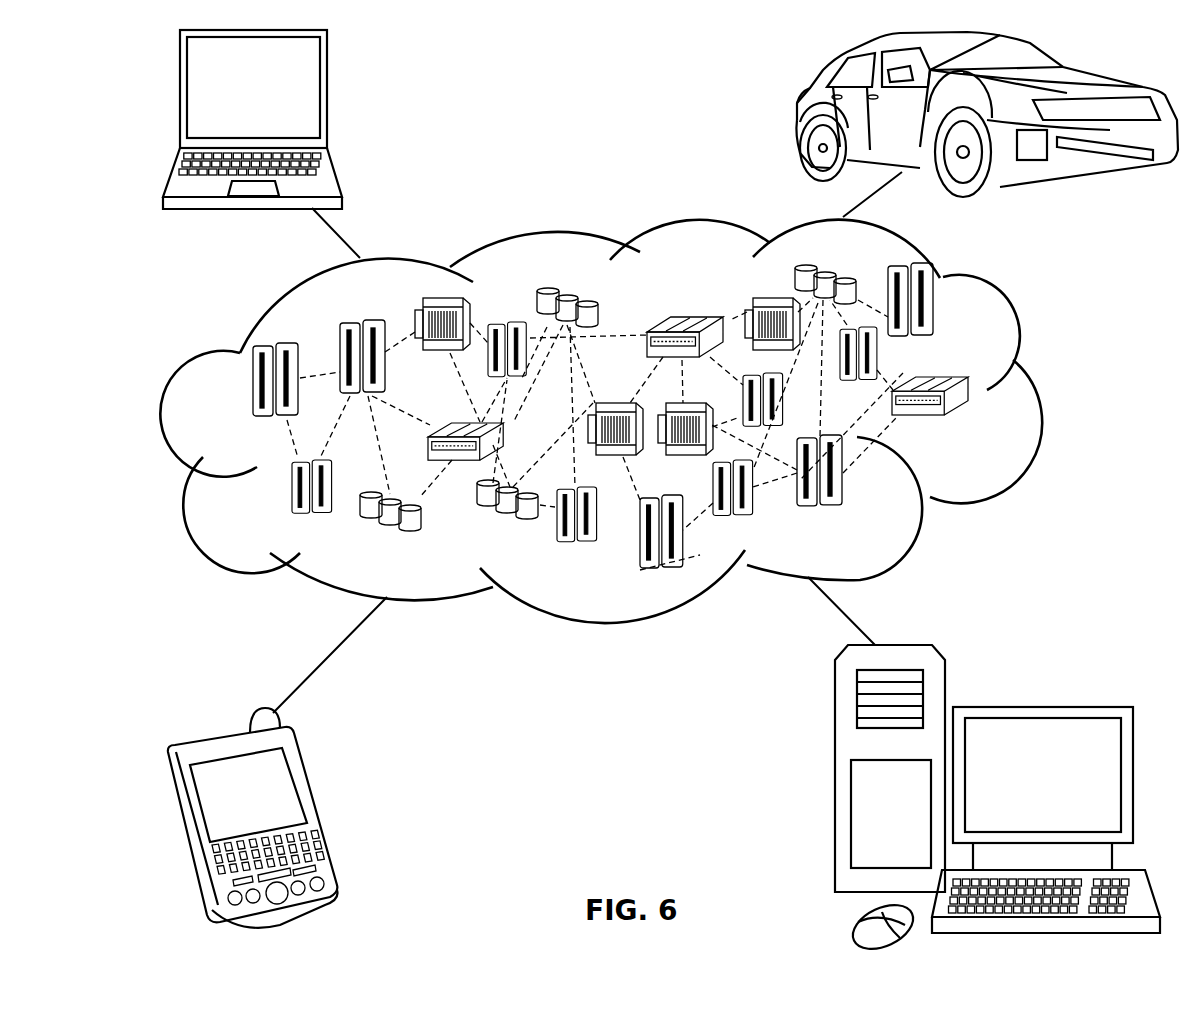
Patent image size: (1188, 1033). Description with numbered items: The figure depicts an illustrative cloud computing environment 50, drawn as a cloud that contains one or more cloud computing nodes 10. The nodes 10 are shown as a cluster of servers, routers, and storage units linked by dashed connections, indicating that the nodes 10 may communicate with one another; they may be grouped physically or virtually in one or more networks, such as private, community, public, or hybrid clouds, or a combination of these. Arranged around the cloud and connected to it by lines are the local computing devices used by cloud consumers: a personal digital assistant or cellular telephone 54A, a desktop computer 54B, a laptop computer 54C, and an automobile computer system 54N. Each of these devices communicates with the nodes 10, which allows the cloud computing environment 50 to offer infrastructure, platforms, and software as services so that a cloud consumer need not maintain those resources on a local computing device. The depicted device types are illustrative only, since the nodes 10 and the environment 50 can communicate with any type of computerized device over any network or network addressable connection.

The cloud computing node 10 is at (978, 430).
The cloud computing environment 50 is at (1045, 393).
The personal digital assistant or cellular telephone 54A is at (318, 808).
The desktop computer 54B is at (1038, 707).
The laptop computer 54C is at (328, 97).
The automobile computer system 54N is at (800, 117).